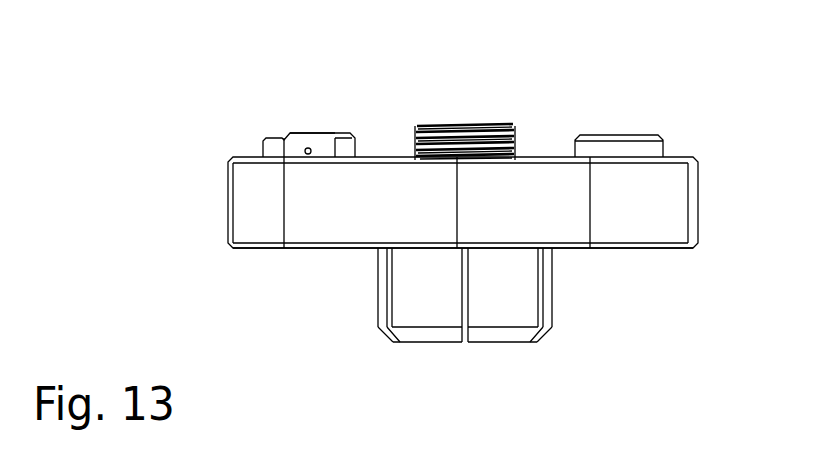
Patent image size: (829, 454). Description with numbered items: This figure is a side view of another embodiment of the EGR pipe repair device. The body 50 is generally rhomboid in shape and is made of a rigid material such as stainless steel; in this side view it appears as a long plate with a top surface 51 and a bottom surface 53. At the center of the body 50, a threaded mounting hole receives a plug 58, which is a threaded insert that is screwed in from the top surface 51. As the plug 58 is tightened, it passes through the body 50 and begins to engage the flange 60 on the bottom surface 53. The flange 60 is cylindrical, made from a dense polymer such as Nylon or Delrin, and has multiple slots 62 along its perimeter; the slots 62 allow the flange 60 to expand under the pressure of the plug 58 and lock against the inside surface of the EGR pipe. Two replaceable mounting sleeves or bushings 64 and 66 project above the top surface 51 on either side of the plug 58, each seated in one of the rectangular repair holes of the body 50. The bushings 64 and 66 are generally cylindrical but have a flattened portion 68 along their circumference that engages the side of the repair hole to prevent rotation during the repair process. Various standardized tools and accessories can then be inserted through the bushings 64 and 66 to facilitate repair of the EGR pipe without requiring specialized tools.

The body 50 is at (260, 208).
The top surface 51 is at (551, 149).
The bottom surface 53 is at (309, 263).
The plug 58 is at (467, 123).
The flange 60 is at (517, 292).
The slots 62 is at (473, 359).
The bushing 64 is at (277, 152).
The bushing 66 is at (622, 150).
The flattened portion 68 is at (327, 130).